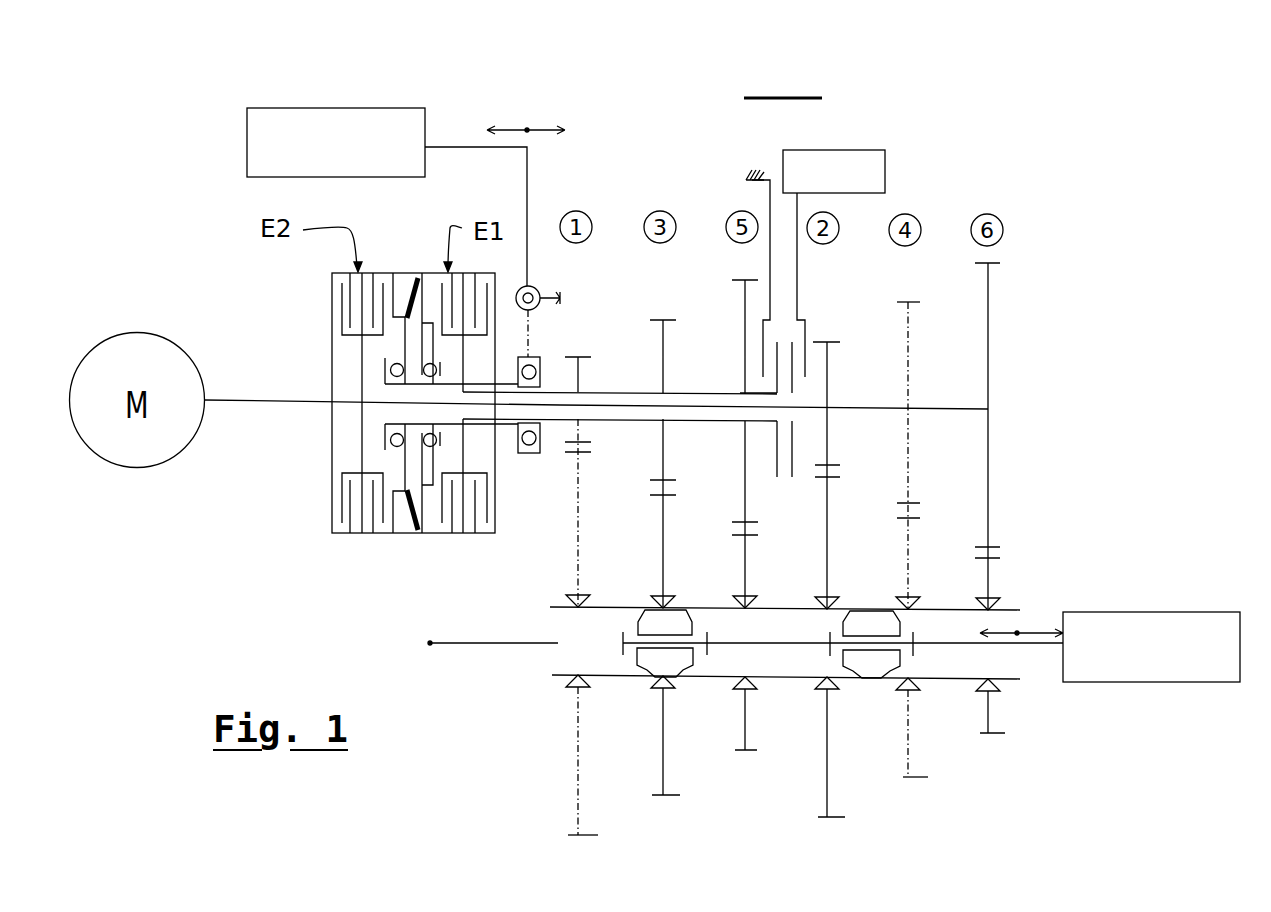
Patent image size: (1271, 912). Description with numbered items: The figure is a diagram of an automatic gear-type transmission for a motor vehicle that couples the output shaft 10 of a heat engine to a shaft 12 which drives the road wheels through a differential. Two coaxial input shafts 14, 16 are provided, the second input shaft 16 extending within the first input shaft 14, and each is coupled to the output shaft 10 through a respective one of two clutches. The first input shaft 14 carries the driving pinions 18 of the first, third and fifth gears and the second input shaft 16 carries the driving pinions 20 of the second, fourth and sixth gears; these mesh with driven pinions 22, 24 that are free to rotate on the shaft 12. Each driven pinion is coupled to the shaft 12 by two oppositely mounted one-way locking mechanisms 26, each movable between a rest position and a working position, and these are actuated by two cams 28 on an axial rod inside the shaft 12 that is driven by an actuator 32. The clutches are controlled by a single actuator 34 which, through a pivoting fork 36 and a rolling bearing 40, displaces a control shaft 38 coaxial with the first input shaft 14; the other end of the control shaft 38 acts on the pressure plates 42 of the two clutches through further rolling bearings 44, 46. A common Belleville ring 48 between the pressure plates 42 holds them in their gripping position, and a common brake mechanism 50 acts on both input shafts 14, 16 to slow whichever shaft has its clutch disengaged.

The output shaft 10 is at (233, 400).
The shaft 12 is at (553, 677).
The first input shaft 14 is at (710, 393).
The second input shaft 16 is at (876, 409).
The driving pinions 18 is at (663, 357).
The driving pinions 20 is at (907, 302).
The driven pinions 22 is at (663, 535).
The driven pinions 24 is at (908, 580).
The controlled one-way locking mechanisms 26 is at (658, 595).
The cams 28 is at (638, 624).
The actuator 32 is at (1170, 612).
The actuator 34 is at (338, 108).
The pivoting fork 36 is at (527, 158).
The control shaft 38 is at (505, 447).
The rolling bearing 40 is at (542, 357).
The pressure plates 42 is at (405, 342).
The rolling bearing 44 is at (390, 367).
The rolling bearing 46 is at (432, 377).
The common Belleville ring 48 is at (405, 272).
The common brake mechanism 50 is at (842, 150).